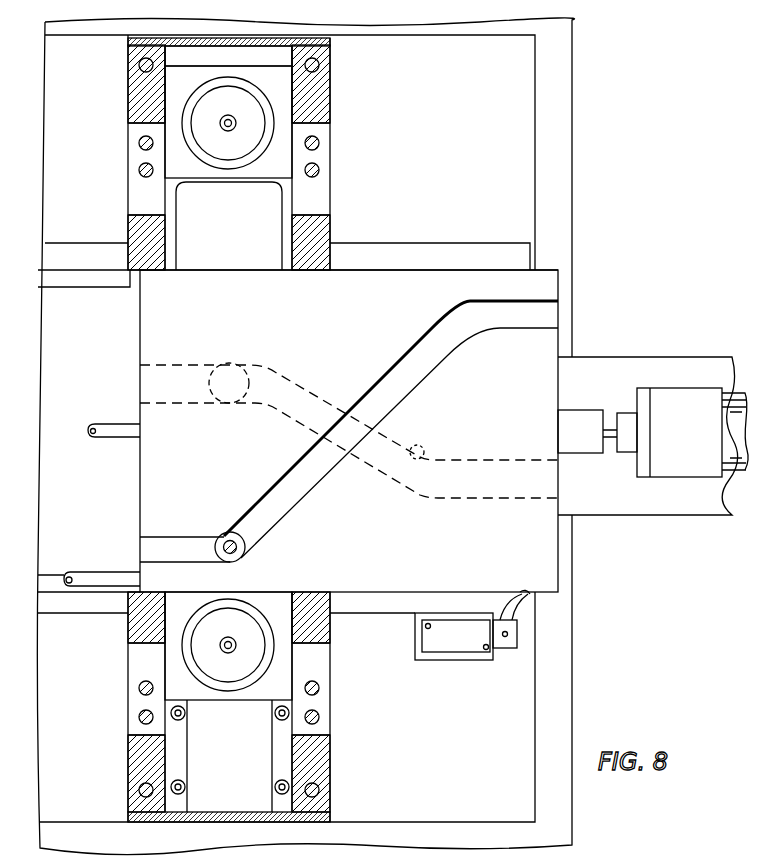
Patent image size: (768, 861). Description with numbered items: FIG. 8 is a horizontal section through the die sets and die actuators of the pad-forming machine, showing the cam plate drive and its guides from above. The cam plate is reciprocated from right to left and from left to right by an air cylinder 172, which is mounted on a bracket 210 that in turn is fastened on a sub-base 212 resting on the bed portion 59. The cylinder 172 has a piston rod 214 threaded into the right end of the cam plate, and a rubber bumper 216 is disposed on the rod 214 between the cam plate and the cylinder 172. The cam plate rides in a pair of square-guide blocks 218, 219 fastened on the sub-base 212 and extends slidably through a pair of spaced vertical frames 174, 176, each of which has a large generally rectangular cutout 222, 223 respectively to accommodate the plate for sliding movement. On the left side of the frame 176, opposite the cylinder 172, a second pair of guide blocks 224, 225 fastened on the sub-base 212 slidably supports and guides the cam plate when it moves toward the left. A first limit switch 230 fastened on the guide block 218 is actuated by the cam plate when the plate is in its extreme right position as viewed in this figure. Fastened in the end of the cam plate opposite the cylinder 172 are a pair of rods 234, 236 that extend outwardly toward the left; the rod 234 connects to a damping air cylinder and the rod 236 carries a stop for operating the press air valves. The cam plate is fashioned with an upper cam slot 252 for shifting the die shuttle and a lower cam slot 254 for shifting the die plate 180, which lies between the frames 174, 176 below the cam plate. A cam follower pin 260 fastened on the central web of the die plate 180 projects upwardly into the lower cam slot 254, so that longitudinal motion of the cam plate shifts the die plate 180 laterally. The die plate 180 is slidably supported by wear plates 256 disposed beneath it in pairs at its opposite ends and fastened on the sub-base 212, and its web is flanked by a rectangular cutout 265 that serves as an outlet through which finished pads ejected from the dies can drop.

The bed portion 59 is at (566, 796).
The air cylinder 172 is at (672, 395).
The vertical frame 174 is at (332, 762).
The vertical frame 176 is at (128, 765).
The die plate 180 is at (292, 229).
The bracket 210 is at (628, 505).
The sub-base 212 is at (527, 731).
The piston rod 214 is at (607, 427).
The rubber bumper 216 is at (572, 413).
The square-guide block 218 is at (372, 613).
The square-guide block 219 is at (445, 257).
The rectangular cutout 222 is at (300, 597).
The rectangular cutout 223 is at (150, 598).
The guide block 224 is at (44, 576).
The guide block 225 is at (62, 290).
The first limit switch 230 is at (466, 660).
The rod 234 is at (108, 424).
The rod 236 is at (90, 572).
The upper cam slot 252 is at (402, 360).
The lower cam slot 254 is at (422, 446).
The wear plate 256 is at (268, 55).
The cam follower pin 260 is at (250, 364).
The rectangular cutout 265 is at (274, 206).